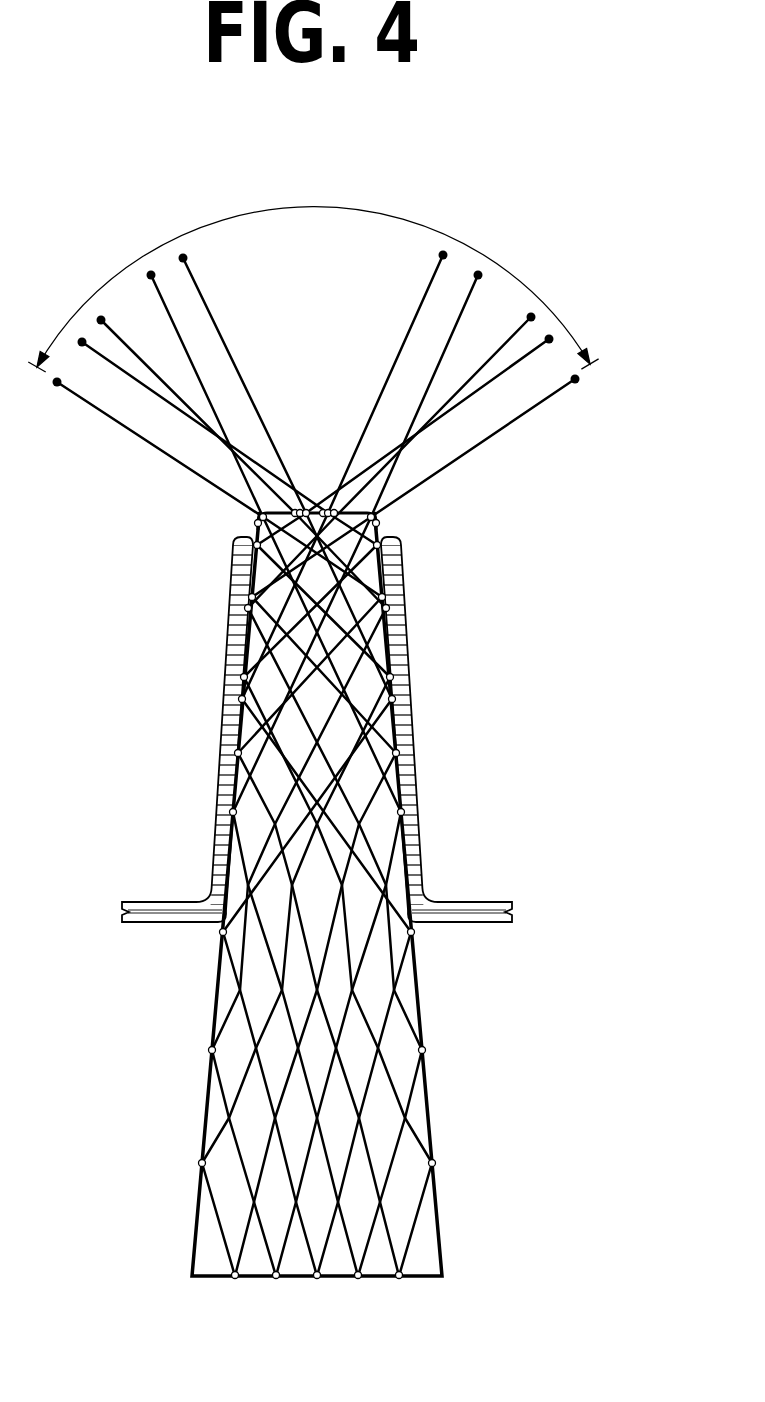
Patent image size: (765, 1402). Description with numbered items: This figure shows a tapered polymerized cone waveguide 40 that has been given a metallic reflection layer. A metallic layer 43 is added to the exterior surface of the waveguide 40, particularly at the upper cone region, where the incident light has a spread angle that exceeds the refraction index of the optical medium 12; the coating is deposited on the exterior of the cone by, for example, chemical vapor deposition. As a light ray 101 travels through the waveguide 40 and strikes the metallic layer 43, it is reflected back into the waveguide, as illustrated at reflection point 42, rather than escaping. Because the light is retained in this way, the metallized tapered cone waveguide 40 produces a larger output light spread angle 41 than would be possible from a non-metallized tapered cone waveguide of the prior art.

The optical medium 12 is at (382, 1105).
The tapered cone waveguide 40 is at (465, 712).
The output light spread angle 41 is at (308, 214).
The reflection point 42 is at (253, 547).
The metallic layer 43 is at (146, 910).
The light ray 101 is at (418, 1286).